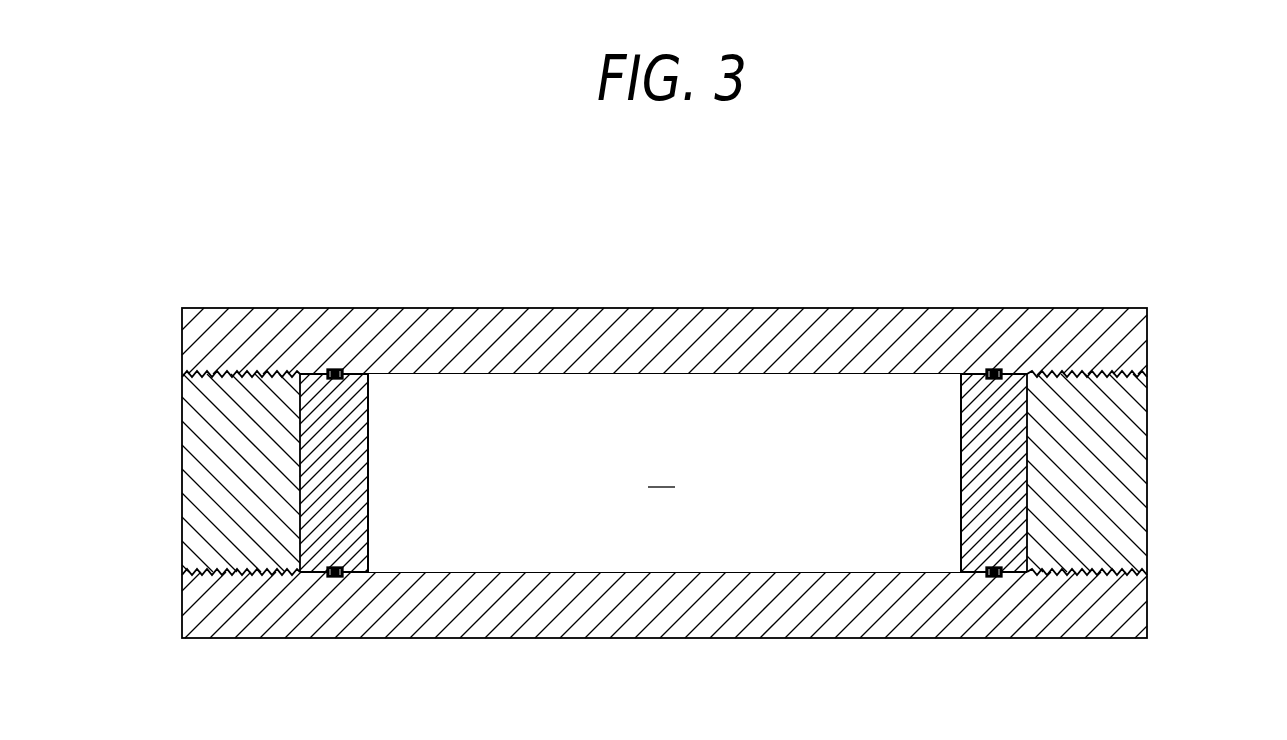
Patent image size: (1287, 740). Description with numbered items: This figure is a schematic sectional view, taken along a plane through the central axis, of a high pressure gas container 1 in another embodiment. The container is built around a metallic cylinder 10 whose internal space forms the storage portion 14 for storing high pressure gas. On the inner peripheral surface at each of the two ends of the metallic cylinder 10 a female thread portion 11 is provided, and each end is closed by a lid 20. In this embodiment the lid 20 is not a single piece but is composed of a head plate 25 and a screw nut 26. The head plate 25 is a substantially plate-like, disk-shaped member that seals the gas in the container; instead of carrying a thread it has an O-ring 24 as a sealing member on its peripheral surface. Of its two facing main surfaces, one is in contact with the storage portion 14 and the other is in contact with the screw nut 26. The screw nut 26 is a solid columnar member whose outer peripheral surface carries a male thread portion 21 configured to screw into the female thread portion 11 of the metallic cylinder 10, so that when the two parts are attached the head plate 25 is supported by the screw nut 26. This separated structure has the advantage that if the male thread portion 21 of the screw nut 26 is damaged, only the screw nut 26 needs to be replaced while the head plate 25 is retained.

The high pressure gas container 1 is at (724, 236).
The metallic cylinder 10 is at (866, 330).
The female thread portion 11 is at (253, 374).
The storage portion 14 is at (664, 473).
The lid 20 is at (669, 473).
The male thread portion 21 is at (231, 374).
The O-ring 24 is at (335, 369).
The head plate 25 is at (328, 462).
The screw nut 26 is at (232, 512).